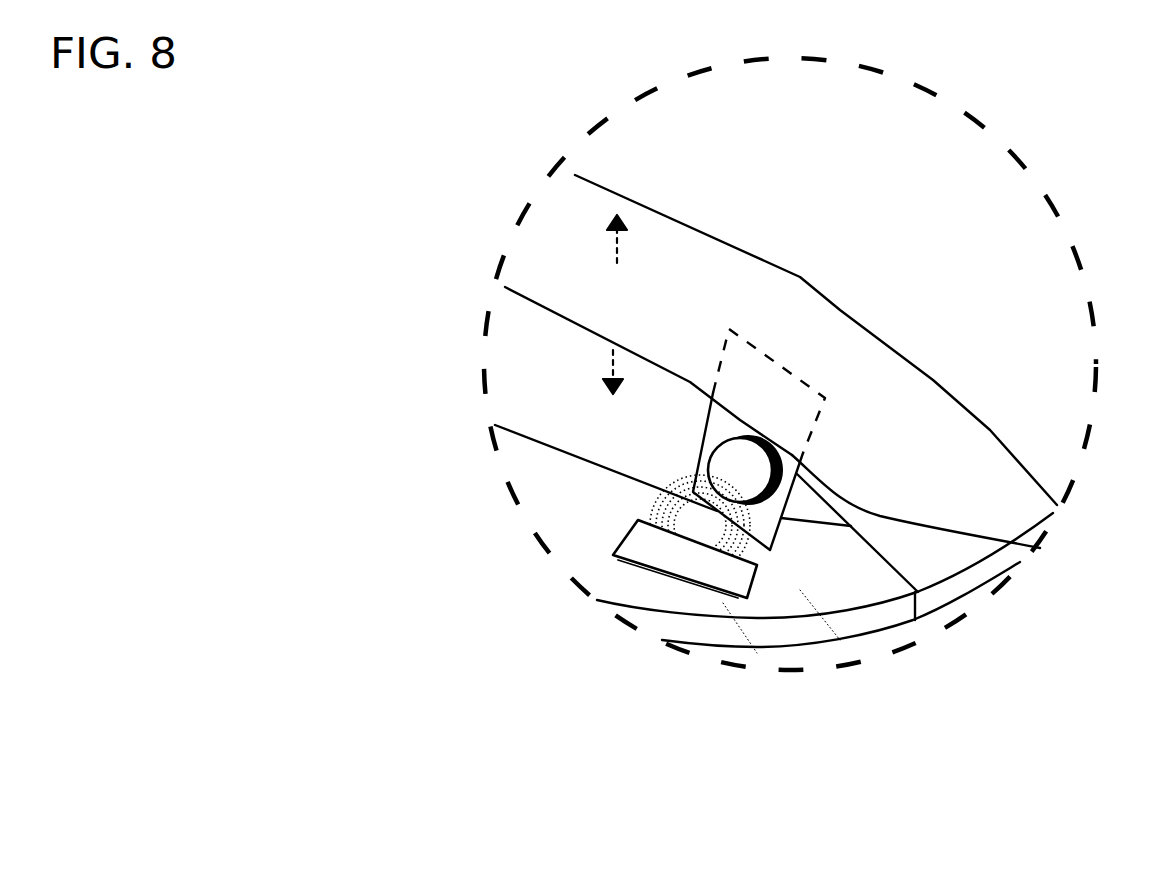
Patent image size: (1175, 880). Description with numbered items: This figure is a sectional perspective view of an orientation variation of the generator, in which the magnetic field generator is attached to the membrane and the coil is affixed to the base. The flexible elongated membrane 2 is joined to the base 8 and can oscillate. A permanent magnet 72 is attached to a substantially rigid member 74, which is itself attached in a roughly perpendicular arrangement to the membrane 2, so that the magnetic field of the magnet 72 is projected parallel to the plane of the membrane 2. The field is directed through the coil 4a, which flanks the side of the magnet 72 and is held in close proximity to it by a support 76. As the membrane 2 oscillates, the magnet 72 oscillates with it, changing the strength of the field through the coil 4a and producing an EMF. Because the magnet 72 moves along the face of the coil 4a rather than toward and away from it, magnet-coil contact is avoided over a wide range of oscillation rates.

The elongated membrane 2 is at (722, 270).
The coil 4a is at (645, 505).
The base 8 is at (653, 586).
The permanent magnet 72 is at (740, 477).
The substantially rigid member 74 is at (1040, 548).
The support 76 is at (688, 575).